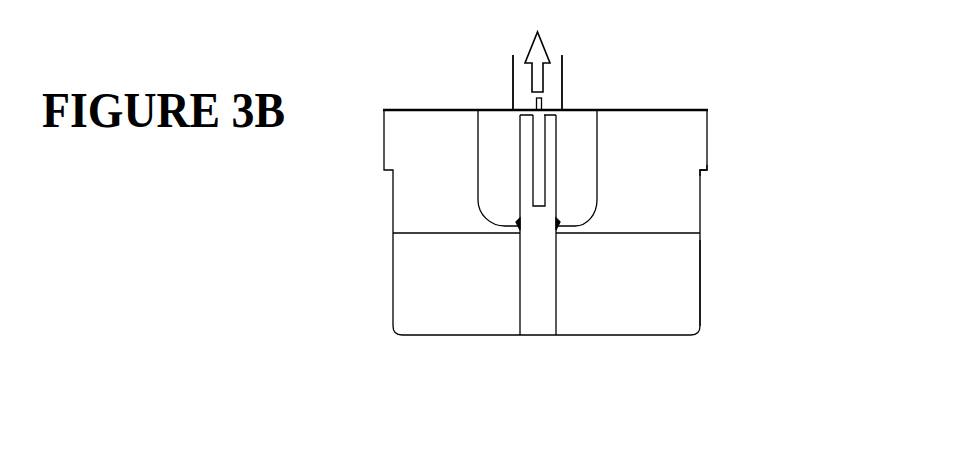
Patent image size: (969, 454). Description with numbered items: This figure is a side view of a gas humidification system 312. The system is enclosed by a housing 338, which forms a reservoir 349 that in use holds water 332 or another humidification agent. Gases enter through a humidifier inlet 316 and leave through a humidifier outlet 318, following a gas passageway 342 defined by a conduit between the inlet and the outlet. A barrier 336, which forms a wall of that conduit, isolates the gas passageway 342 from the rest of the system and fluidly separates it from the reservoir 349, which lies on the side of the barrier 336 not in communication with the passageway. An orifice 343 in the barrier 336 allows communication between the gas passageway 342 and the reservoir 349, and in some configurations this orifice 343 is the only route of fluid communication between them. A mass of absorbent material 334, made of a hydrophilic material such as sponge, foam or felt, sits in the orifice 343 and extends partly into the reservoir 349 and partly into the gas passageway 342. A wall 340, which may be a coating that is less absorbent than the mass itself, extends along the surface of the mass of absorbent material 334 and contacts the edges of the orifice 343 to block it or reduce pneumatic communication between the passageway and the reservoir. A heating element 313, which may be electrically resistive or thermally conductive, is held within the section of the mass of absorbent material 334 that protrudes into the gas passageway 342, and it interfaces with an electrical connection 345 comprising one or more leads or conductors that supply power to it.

The gas humidification system 312 is at (733, 227).
The heating element 313 is at (541, 147).
The humidifier inlet 316 is at (574, 56).
The humidifier outlet 318 is at (558, 47).
The water 332 is at (660, 281).
The mass of absorbent material 334 is at (540, 317).
The barrier 336 is at (562, 226).
The housing 338 is at (702, 176).
The wall 340 is at (524, 115).
The gas passageway 342 is at (583, 150).
The orifice 343 is at (518, 232).
The electrical connection 345 is at (537, 97).
The reservoir 349 is at (677, 210).